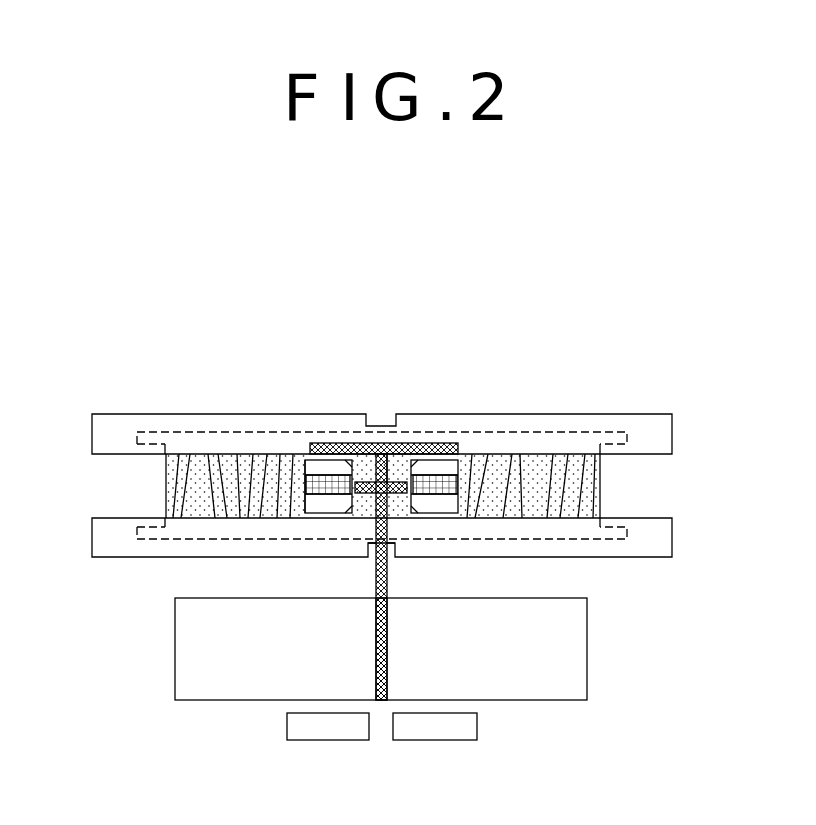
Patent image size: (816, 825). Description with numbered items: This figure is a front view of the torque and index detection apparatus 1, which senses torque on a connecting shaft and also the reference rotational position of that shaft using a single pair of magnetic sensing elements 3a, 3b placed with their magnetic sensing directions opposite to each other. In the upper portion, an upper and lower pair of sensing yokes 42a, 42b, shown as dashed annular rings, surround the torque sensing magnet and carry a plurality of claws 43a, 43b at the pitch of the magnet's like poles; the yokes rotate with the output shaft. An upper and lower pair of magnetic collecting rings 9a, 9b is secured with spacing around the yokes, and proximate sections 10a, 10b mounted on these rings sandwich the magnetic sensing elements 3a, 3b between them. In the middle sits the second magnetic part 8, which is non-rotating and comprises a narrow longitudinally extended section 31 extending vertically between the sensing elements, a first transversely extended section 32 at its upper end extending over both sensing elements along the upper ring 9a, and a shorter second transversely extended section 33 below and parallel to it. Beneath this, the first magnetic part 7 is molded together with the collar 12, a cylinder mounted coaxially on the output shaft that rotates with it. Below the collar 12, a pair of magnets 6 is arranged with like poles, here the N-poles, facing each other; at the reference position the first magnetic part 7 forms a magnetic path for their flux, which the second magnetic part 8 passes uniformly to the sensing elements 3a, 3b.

The torque and index detection apparatus 1 is at (113, 397).
The magnetic sensing element 3a is at (303, 478).
The magnetic sensing element 3b is at (392, 465).
The magnets 6 is at (500, 747).
The first magnetic part 7 is at (387, 627).
The second magnetic part 8 is at (393, 562).
The magnetic collecting ring 9a is at (92, 432).
The magnetic collecting ring 9b is at (92, 538).
The proximate section 10a is at (455, 468).
The proximate section 10b is at (448, 502).
The collar 12 is at (577, 647).
The longitudinally extended section 31 is at (376, 573).
The first transversely extended section 32 is at (417, 443).
The second transversely extended section 33 is at (359, 493).
The sensing yoke 42a is at (672, 432).
The sensing yoke 42b is at (672, 539).
The claws 43a is at (235, 486).
The claws 43b is at (600, 485).